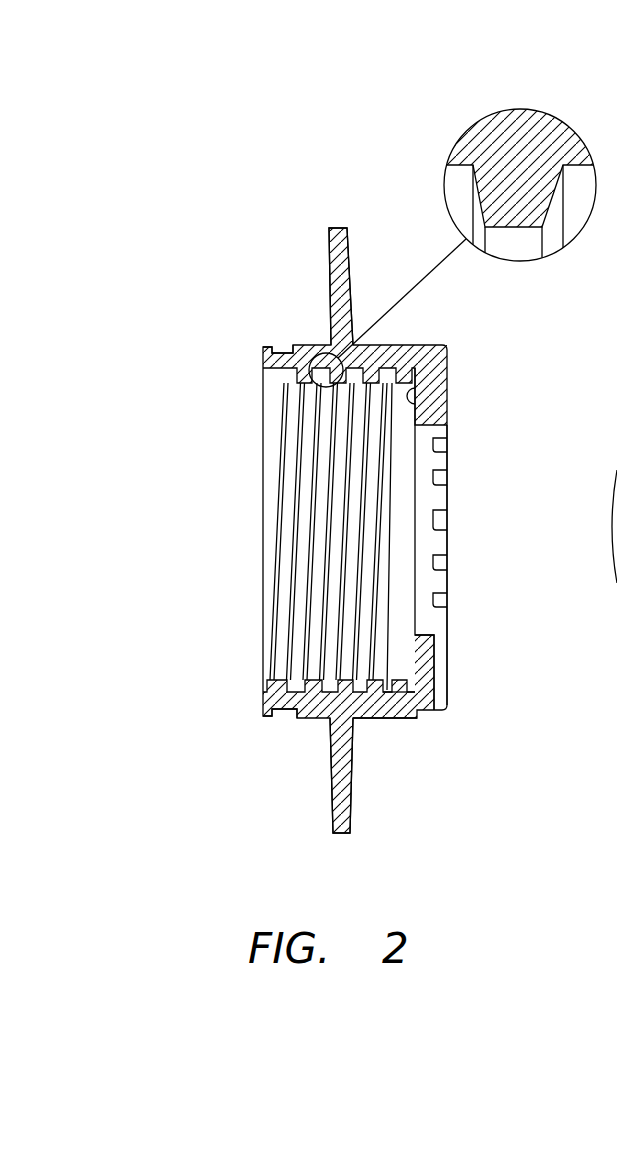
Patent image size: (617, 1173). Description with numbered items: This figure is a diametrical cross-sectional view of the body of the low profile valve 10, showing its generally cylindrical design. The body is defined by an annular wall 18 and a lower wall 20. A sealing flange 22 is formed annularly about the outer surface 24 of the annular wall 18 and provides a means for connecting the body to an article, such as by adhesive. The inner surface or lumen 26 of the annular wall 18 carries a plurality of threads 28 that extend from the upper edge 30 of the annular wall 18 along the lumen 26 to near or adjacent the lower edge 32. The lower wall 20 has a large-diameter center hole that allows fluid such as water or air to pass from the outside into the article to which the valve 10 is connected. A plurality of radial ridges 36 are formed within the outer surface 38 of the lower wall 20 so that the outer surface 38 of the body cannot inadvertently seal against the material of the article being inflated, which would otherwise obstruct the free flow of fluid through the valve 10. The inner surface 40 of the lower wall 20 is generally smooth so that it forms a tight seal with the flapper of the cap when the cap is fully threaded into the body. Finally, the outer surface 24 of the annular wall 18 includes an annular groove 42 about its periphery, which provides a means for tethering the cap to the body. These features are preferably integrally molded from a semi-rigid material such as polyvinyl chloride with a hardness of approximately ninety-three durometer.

The low profile valve 10 is at (520, 348).
The annular wall 18 is at (312, 712).
The lower wall 20 is at (428, 658).
The sealing flange 22 is at (330, 803).
The outer surface 24 is at (367, 717).
The lumen 26 is at (270, 378).
The threads 28 is at (287, 383).
The upper edge 30 is at (263, 696).
The lower edge 32 is at (403, 683).
The radial ridges 36 is at (448, 546).
The outer surface 38 is at (457, 455).
The inner surface 40 is at (413, 384).
The annular groove 42 is at (282, 345).